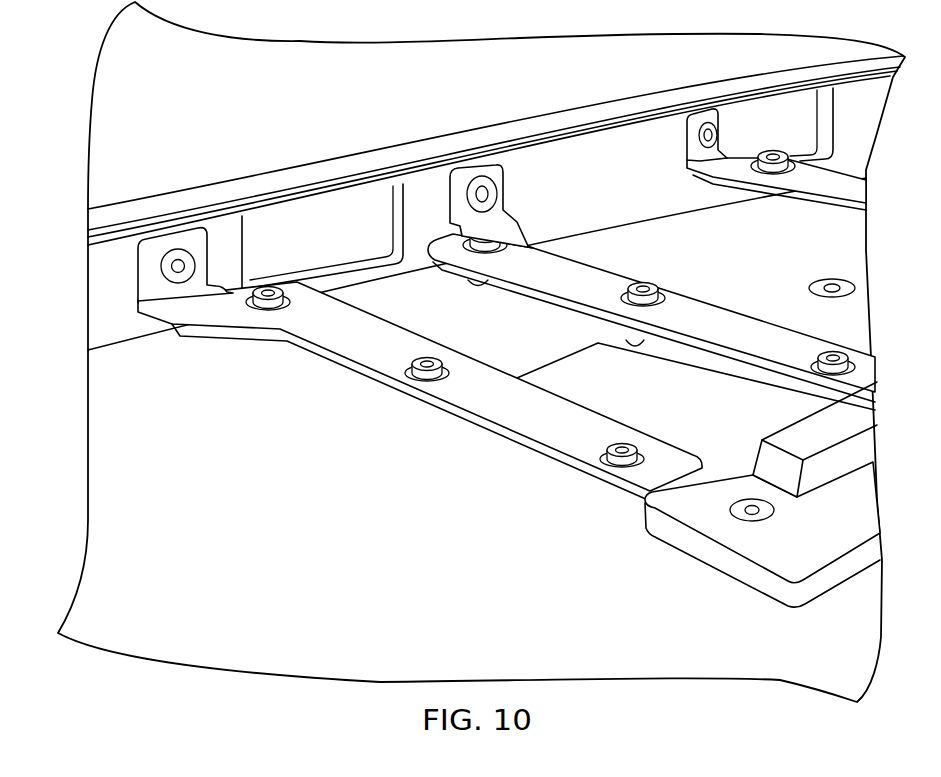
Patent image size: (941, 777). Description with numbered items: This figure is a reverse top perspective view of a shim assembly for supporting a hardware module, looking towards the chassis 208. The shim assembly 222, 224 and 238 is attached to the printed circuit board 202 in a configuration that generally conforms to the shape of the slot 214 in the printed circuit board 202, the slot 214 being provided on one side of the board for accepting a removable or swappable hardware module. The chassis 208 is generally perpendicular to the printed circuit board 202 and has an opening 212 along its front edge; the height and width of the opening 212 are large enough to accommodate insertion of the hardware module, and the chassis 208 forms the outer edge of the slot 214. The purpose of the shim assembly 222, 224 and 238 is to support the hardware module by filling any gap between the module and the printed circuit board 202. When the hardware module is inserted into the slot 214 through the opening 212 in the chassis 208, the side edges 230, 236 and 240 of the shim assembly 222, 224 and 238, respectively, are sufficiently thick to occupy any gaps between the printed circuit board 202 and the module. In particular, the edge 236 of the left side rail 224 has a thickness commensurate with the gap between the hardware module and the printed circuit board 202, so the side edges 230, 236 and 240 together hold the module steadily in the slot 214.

The printed circuit board 202 is at (850, 262).
The chassis 208 is at (867, 108).
The opening 212 is at (333, 217).
The slot 214 is at (680, 386).
The shim assembly 222 is at (420, 364).
The left side rail 224 is at (651, 283).
The side edge 230 is at (412, 397).
The side edge 236 is at (500, 278).
The shim assembly 238 is at (762, 502).
The side edge 240 is at (667, 533).